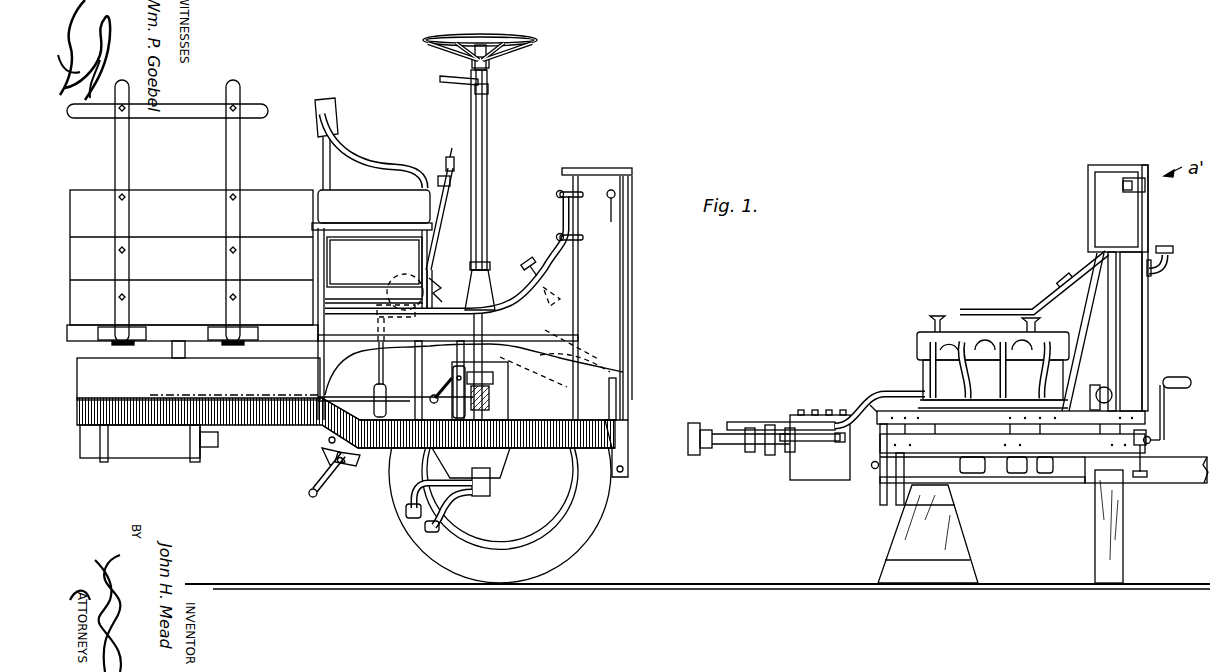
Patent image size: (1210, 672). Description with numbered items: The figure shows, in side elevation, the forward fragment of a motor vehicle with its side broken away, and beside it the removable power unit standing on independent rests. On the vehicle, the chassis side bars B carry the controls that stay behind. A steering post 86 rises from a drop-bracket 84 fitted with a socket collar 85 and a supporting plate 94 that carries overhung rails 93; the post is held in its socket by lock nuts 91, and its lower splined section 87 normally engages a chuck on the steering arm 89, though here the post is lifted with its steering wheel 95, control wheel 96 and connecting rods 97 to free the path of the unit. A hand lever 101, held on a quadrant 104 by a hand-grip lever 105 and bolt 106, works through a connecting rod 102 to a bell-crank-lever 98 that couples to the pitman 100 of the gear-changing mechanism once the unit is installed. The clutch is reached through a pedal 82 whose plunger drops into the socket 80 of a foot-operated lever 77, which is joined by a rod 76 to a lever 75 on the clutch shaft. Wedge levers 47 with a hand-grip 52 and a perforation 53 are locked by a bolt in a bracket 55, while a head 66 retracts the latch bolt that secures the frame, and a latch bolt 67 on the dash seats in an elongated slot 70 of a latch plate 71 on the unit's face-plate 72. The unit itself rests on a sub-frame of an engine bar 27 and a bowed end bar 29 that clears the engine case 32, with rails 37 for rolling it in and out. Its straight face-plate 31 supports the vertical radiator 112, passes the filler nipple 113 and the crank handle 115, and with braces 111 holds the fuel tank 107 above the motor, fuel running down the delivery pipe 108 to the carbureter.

The steering wheel 95 is at (496, 38).
The control wheel 96 is at (462, 83).
The connecting rods 97 is at (471, 141).
The steering post 86 is at (488, 193).
The hand lever 101 is at (440, 178).
The hand-grip lever 105 is at (462, 160).
The bolt 106 is at (434, 236).
The quadrant 104 is at (447, 283).
The connecting rod 102 is at (378, 379).
The bell-crank-lever 98 is at (375, 405).
The pedal 82 is at (531, 257).
The latch bolt 67 is at (611, 200).
The socket 80 is at (560, 294).
The foot-operated lever 77 is at (553, 308).
The supporting plate 94 is at (492, 352).
The overhung rails 93 is at (494, 385).
The splined section 87 is at (490, 402).
The bracket 55 is at (330, 441).
The perforation 53 is at (325, 452).
The hand-grip 52 is at (316, 497).
The lever 47 is at (350, 465).
The steering arm 89 is at (418, 483).
The socket collar 85 is at (470, 478).
The drop-bracket 84 is at (508, 460).
The side bars B is at (100, 400).
The latch plate 71 is at (873, 469).
The elongated slot 70 is at (1125, 186).
The face-plate 72 is at (1149, 219).
The fuel tank 107 is at (1105, 231).
The nipple 113 is at (1169, 265).
The braces 111 is at (1084, 333).
The radiator 112 is at (1128, 329).
The face-plate 31 is at (1151, 362).
The crank handle 115 is at (1188, 362).
The lock nuts 91 is at (917, 343).
The rod 76 is at (880, 392).
The lever 75 is at (872, 410).
The pitman 100 is at (836, 444).
The delivery pipe 108 is at (1096, 398).
The rails 37 is at (1068, 417).
The end bar 29 is at (889, 502).
The engine case 32 is at (990, 474).
The engine bar 27 is at (1078, 442).
The head 66 is at (1140, 466).